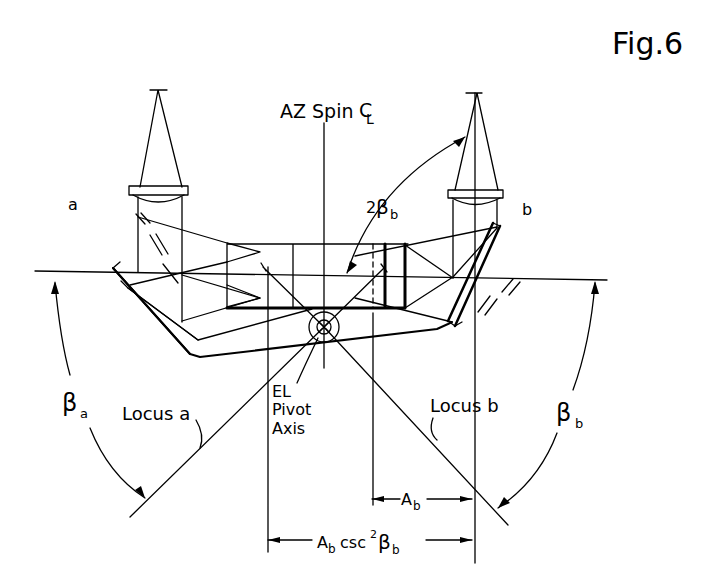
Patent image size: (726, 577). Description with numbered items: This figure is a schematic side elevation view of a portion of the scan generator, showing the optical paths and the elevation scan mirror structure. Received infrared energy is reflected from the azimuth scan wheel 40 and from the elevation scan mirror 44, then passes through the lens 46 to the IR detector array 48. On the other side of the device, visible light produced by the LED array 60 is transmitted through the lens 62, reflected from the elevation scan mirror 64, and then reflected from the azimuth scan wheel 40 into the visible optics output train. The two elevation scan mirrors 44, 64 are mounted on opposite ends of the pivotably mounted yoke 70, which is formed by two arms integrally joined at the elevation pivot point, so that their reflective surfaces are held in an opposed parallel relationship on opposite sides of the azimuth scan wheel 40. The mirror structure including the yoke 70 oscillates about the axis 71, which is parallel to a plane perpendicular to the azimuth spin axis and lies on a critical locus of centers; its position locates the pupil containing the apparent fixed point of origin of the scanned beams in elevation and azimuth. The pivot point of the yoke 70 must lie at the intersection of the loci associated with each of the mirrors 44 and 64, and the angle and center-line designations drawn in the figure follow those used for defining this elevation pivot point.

The azimuth scan wheel 40 is at (280, 252).
The elevation scan mirror 44 is at (113, 268).
The lens 46 is at (190, 190).
The IR detector array 48 is at (160, 91).
The LED array 60 is at (480, 95).
The lens 62 is at (503, 195).
The elevation scan mirror 64 is at (498, 226).
The yoke 70 is at (392, 329).
The axis 71 is at (338, 330).